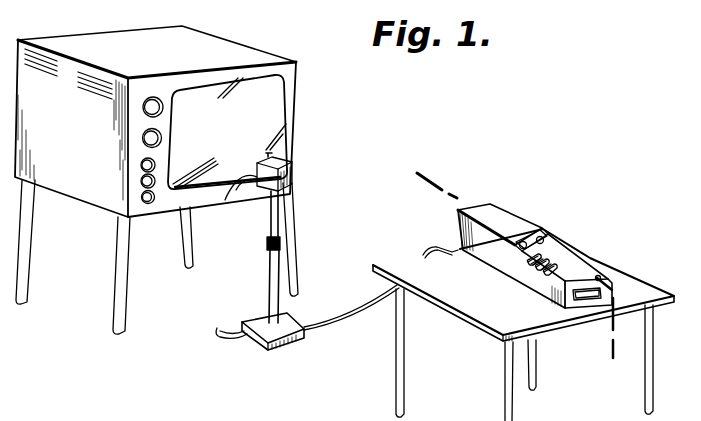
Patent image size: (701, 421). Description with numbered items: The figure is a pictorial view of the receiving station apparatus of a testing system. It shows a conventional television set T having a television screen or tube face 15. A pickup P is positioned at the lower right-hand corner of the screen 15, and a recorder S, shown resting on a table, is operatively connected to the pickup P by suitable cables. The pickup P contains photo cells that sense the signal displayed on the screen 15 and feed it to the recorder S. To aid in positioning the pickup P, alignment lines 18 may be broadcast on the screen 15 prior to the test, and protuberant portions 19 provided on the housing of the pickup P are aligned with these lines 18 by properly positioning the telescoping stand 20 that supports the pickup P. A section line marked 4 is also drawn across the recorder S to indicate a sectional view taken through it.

The television set T is at (228, 45).
The television screen 15 is at (276, 103).
The pickup P is at (290, 170).
The alignment lines 18 is at (255, 176).
The protuberant portions 19 is at (270, 186).
The telescoping stand 20 is at (270, 266).
The recorder S is at (497, 222).
The section line 4- 4 is at (428, 184).